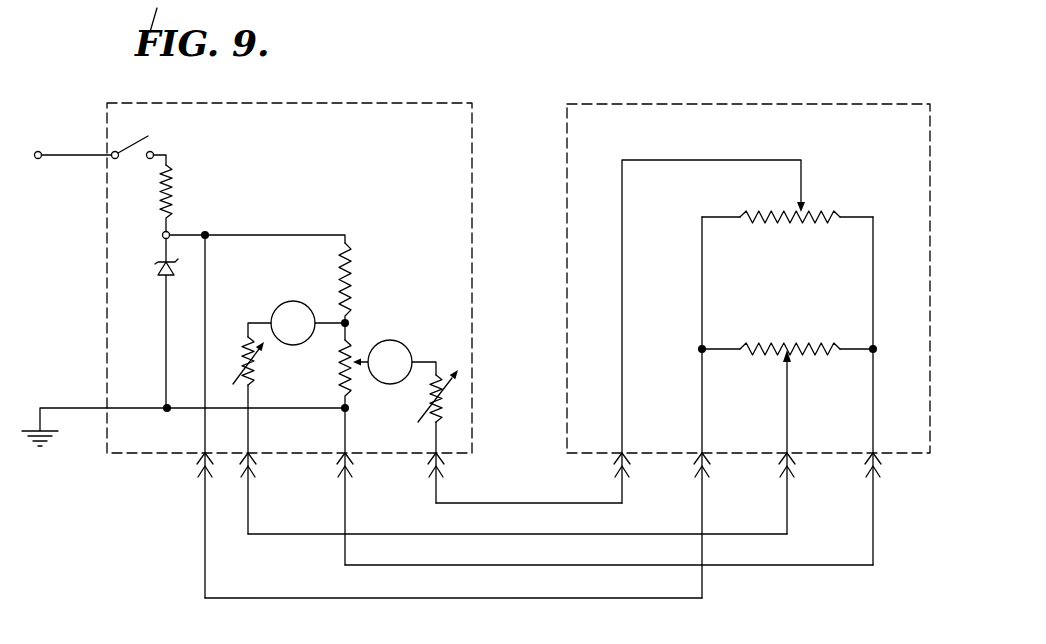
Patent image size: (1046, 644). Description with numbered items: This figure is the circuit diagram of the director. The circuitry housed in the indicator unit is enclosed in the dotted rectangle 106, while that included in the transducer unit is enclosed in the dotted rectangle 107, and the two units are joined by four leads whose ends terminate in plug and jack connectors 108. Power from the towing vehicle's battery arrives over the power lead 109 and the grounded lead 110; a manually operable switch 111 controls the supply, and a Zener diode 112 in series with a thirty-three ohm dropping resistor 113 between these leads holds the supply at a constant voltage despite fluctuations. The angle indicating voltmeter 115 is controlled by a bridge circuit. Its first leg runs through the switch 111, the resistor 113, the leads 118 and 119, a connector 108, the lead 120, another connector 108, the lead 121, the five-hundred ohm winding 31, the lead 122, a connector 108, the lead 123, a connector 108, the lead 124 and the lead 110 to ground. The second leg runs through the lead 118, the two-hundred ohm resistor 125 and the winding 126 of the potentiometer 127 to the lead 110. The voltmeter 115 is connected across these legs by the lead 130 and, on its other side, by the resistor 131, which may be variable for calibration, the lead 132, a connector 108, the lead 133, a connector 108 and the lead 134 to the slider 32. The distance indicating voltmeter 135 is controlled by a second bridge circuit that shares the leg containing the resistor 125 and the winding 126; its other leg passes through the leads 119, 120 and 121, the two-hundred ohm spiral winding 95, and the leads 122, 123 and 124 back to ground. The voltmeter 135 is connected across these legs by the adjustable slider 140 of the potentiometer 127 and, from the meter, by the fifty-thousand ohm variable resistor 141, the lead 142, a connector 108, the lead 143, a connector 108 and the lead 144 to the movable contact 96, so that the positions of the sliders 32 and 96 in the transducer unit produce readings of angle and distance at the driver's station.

The winding 31 is at (772, 344).
The slider 32 is at (792, 373).
The spiral winding 95 is at (785, 224).
The movable contact 96 is at (805, 208).
The dotted rectangle 106 is at (383, 103).
The dotted rectangle 107 is at (750, 104).
The plug and jack connectors 108 is at (196, 469).
The power lead 109 is at (80, 156).
The grounded lead 110 is at (80, 408).
The switch 111 is at (137, 136).
The Zener diode 112 is at (162, 272).
The dropping resistor 113 is at (173, 191).
The angle indicating voltmeter 115 is at (278, 306).
The lead 118 is at (258, 235).
The lead 119 is at (206, 258).
The lead 120 is at (300, 600).
The lead 121 is at (702, 402).
The lead 122 is at (875, 418).
The lead 123 is at (515, 567).
The lead 124 is at (349, 444).
The resistor 125 is at (348, 282).
The winding 126 is at (338, 381).
The potentiometer 127 is at (359, 344).
The lead 130 is at (324, 322).
The resistor 131 is at (258, 363).
The lead 132 is at (252, 445).
The lead 133 is at (394, 536).
The lead 134 is at (788, 439).
The distance indicating voltmeter 135 is at (410, 350).
The slider 140 is at (360, 366).
The variable resistor 141 is at (444, 402).
The lead 142 is at (438, 442).
The lead 143 is at (508, 505).
The lead 144 is at (622, 293).